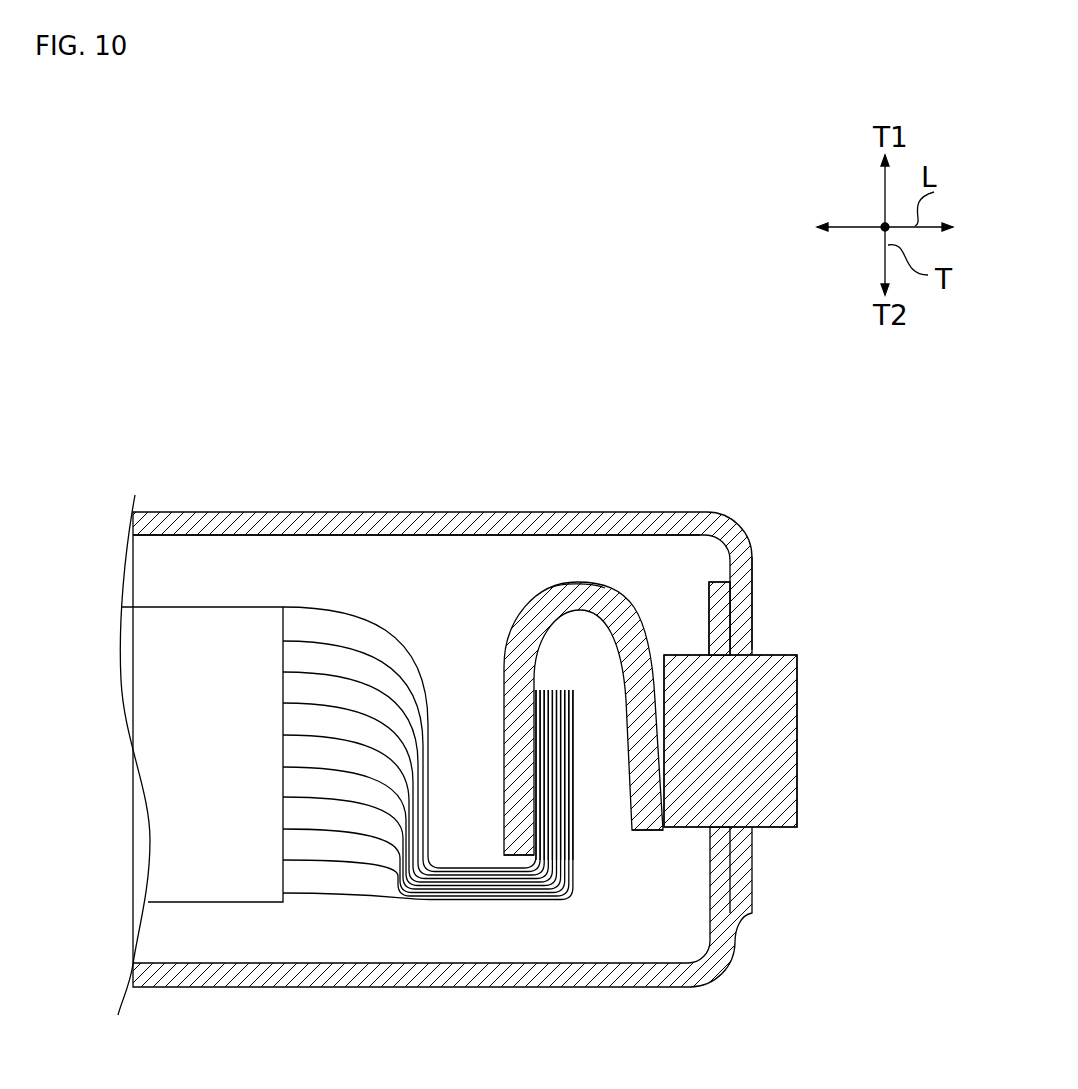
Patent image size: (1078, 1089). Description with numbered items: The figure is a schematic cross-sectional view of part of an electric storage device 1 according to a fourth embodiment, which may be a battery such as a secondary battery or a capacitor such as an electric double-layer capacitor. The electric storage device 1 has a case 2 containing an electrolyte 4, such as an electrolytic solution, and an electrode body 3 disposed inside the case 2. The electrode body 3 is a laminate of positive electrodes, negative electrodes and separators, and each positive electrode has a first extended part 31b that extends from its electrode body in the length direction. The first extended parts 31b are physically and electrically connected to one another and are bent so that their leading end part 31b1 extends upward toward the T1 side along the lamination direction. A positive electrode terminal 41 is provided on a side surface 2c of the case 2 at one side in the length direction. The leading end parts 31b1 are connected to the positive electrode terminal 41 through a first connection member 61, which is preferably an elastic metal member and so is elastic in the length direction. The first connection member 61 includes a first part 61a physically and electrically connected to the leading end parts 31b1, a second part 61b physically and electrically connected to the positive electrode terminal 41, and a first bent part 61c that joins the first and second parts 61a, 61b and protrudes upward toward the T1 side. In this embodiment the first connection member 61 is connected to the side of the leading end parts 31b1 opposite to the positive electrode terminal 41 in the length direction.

The electric storage device 1 is at (752, 420).
The case 2 is at (752, 888).
The side surface 2c is at (755, 565).
The electrode body 3 is at (228, 905).
The electrolyte 4 is at (217, 555).
The first extended part 31b is at (315, 605).
The leading end part 31b1 is at (530, 740).
The positive electrode terminal 41 is at (798, 730).
The first connection member 61 is at (642, 615).
The first part 61a is at (518, 858).
The second part 61b is at (650, 832).
The first bent part 61c is at (583, 585).